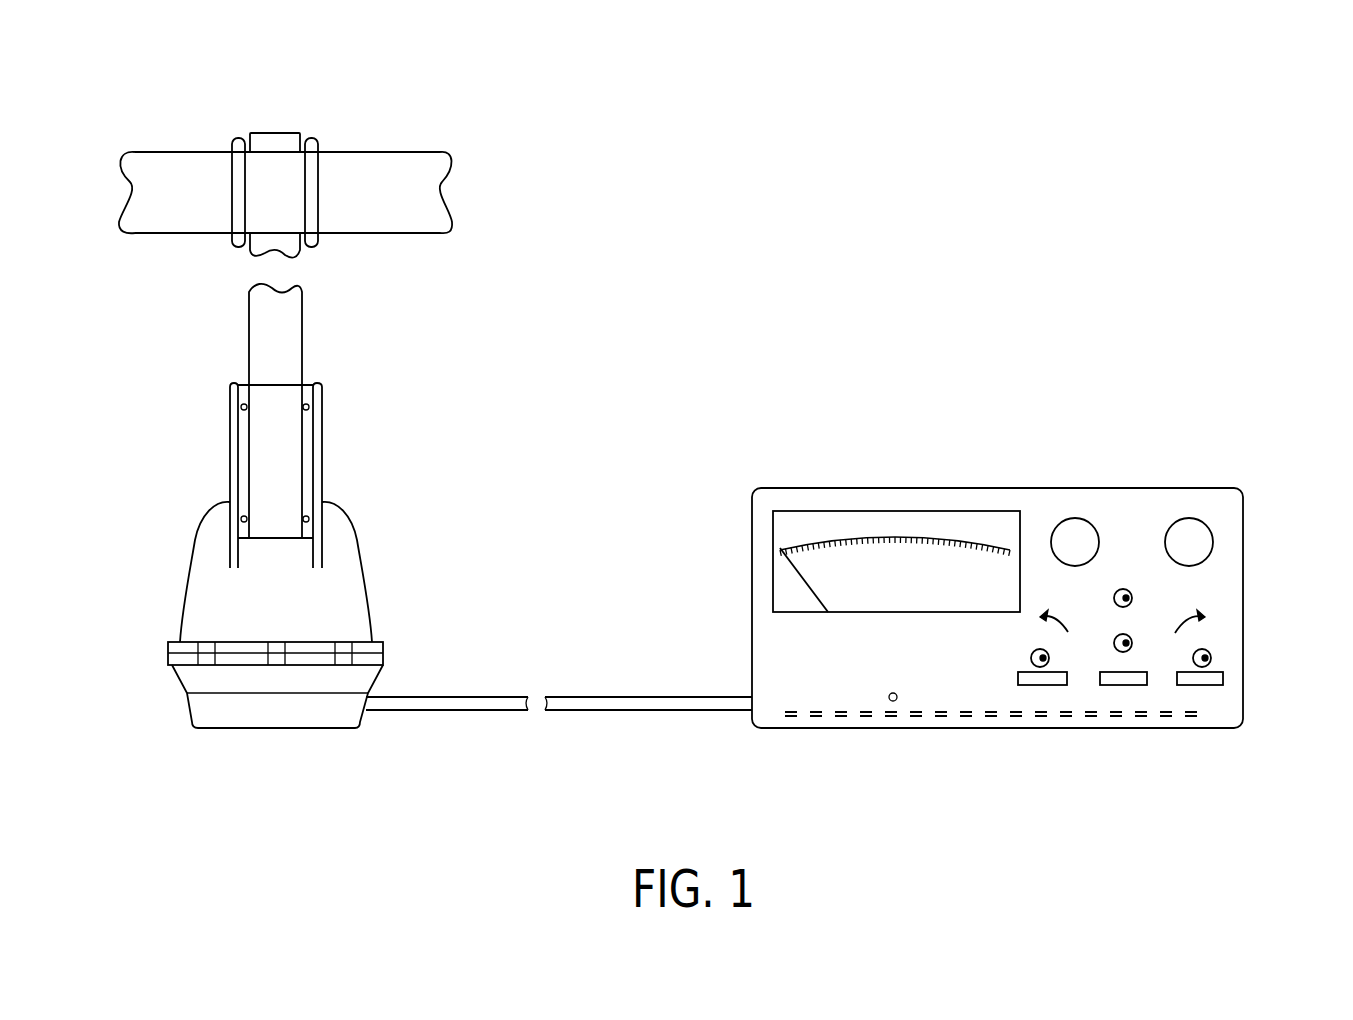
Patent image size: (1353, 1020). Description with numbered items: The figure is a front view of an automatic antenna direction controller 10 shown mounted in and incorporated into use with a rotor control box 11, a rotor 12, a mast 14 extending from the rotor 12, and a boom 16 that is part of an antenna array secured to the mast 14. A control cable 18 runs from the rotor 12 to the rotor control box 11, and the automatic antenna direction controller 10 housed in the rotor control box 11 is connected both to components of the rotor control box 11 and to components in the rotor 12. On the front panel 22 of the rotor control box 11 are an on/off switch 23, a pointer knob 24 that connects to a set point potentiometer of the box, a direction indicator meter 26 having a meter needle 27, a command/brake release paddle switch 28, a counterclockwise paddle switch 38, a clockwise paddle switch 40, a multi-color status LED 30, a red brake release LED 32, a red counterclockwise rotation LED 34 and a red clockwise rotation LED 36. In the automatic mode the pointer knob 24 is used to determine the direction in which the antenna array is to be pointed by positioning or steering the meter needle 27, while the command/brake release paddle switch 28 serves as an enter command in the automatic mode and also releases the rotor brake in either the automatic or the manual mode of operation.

The automatic antenna direction controller 10 is at (968, 720).
The rotor control box 11 is at (850, 488).
The rotor 12 is at (360, 528).
The mast 14 is at (302, 335).
The boom 16 is at (360, 152).
The control cable 18 is at (605, 697).
The front panel 22 is at (773, 630).
The on/off switch 23 is at (1189, 518).
The pointer knob 24 is at (1075, 518).
The direction indicator meter 26 is at (910, 511).
The meter needle 27 is at (815, 587).
The command/brake release paddle switch 28 is at (1125, 685).
The multi-color status LED 30 is at (1132, 598).
The red brake release LED 32 is at (1130, 640).
The red counterclockwise rotation LED 34 is at (1032, 659).
The red clockwise rotation LED 36 is at (1211, 660).
The counterclockwise paddle switch 38 is at (1043, 685).
The clockwise paddle switch 40 is at (1200, 685).